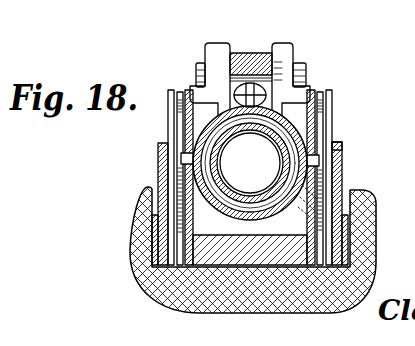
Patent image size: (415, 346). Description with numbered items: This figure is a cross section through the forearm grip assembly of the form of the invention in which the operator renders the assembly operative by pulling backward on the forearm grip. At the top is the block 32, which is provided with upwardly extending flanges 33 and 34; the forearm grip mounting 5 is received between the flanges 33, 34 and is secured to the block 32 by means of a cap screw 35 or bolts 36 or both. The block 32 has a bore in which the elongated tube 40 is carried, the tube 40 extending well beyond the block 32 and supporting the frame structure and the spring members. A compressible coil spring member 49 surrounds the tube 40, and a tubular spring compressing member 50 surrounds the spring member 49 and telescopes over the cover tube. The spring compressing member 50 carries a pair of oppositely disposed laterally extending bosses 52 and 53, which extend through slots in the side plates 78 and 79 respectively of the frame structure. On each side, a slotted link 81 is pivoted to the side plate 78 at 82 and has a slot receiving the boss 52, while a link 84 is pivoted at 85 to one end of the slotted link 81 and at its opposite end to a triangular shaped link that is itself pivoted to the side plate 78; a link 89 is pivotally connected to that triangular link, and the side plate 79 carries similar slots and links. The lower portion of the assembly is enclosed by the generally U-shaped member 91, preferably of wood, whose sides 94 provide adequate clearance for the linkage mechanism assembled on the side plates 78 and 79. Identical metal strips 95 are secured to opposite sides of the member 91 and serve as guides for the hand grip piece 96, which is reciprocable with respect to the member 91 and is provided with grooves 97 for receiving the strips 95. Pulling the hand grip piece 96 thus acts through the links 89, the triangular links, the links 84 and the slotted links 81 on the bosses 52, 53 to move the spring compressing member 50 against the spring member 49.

The forearm grip mounting 5 is at (263, 54).
The block 32 is at (293, 117).
The flange 33 is at (286, 55).
The flange 34 is at (222, 50).
The cap screw 35 is at (226, 77).
The bolts 36 is at (307, 72).
The elongated tube 40 is at (221, 153).
The compressible coil spring member 49 is at (337, 189).
The tubular spring compressing member 50 is at (323, 125).
The boss 52 is at (170, 172).
The boss 53 is at (342, 152).
The side plate 78 is at (185, 88).
The side plate 79 is at (316, 94).
The slotted link 81 is at (175, 195).
The pivot 82 is at (140, 250).
The link 84 is at (168, 96).
The pivot 85 is at (168, 110).
The link 89 is at (332, 213).
The U-shaped member 91 is at (157, 157).
The sides 94 is at (342, 165).
The metal strips 95 is at (150, 227).
The hand grip piece 96 is at (277, 311).
The grooves 97 is at (140, 262).